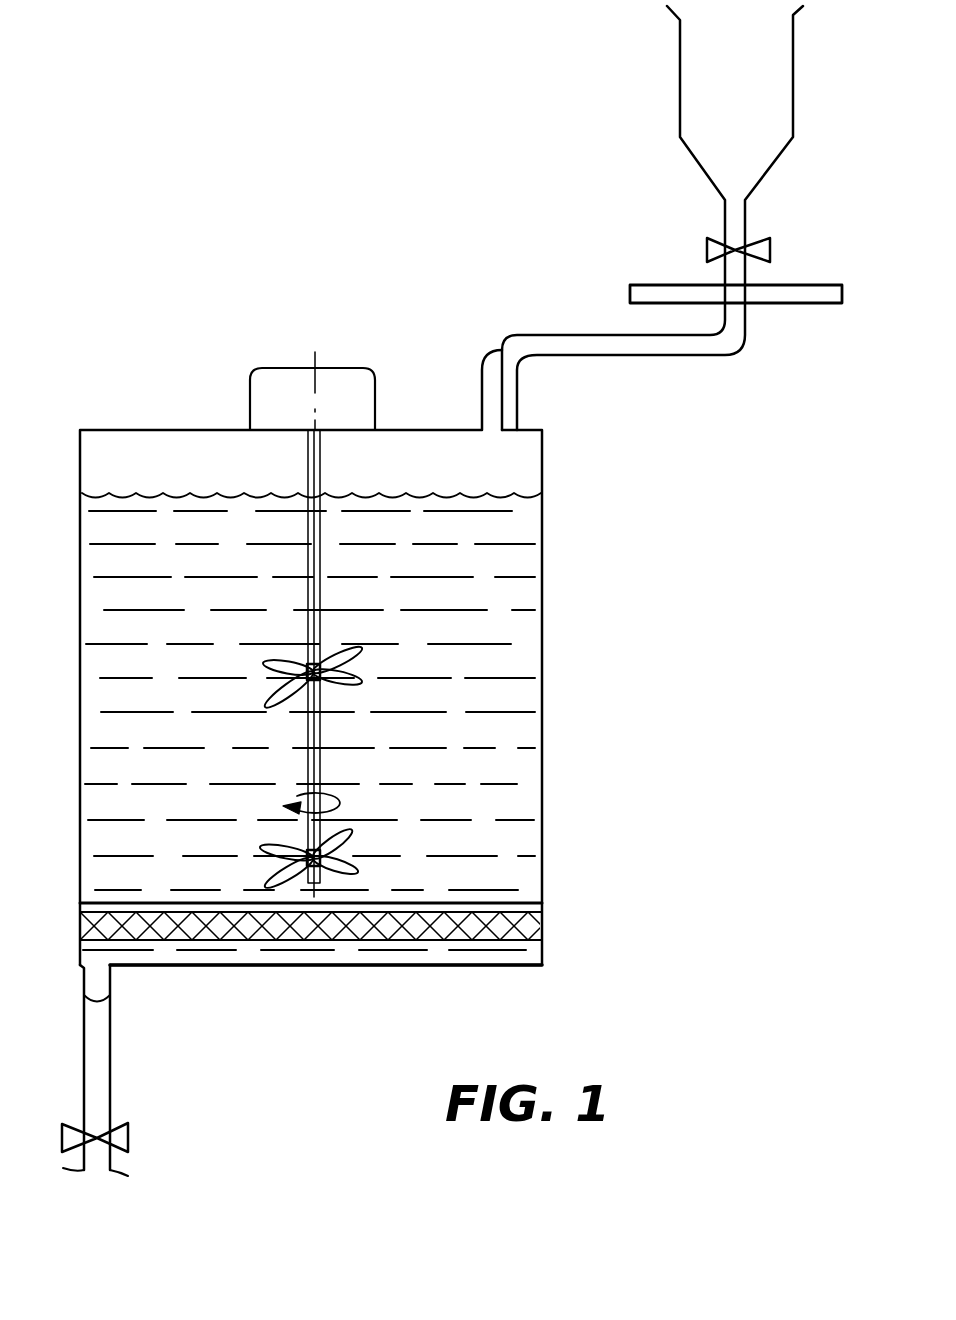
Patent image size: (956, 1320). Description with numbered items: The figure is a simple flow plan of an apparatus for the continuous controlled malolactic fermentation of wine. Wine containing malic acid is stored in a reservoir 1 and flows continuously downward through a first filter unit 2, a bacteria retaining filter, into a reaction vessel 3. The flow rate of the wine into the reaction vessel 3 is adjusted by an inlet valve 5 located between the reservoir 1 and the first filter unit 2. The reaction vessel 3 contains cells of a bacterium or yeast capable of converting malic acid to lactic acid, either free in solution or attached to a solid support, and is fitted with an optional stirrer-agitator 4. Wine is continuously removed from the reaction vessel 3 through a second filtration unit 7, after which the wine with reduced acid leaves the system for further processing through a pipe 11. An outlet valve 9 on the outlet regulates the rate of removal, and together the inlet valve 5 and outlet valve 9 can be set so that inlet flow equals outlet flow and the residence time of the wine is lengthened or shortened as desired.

The reservoir 1 is at (678, 103).
The first filter unit 2 is at (797, 306).
The reaction vessel 3 is at (547, 462).
The stirrer-agitator 4 is at (356, 660).
The inlet valve 5 is at (706, 248).
The second filtration unit 7 is at (535, 927).
The outlet valve 9 is at (130, 1138).
The pipe 11 is at (112, 1075).